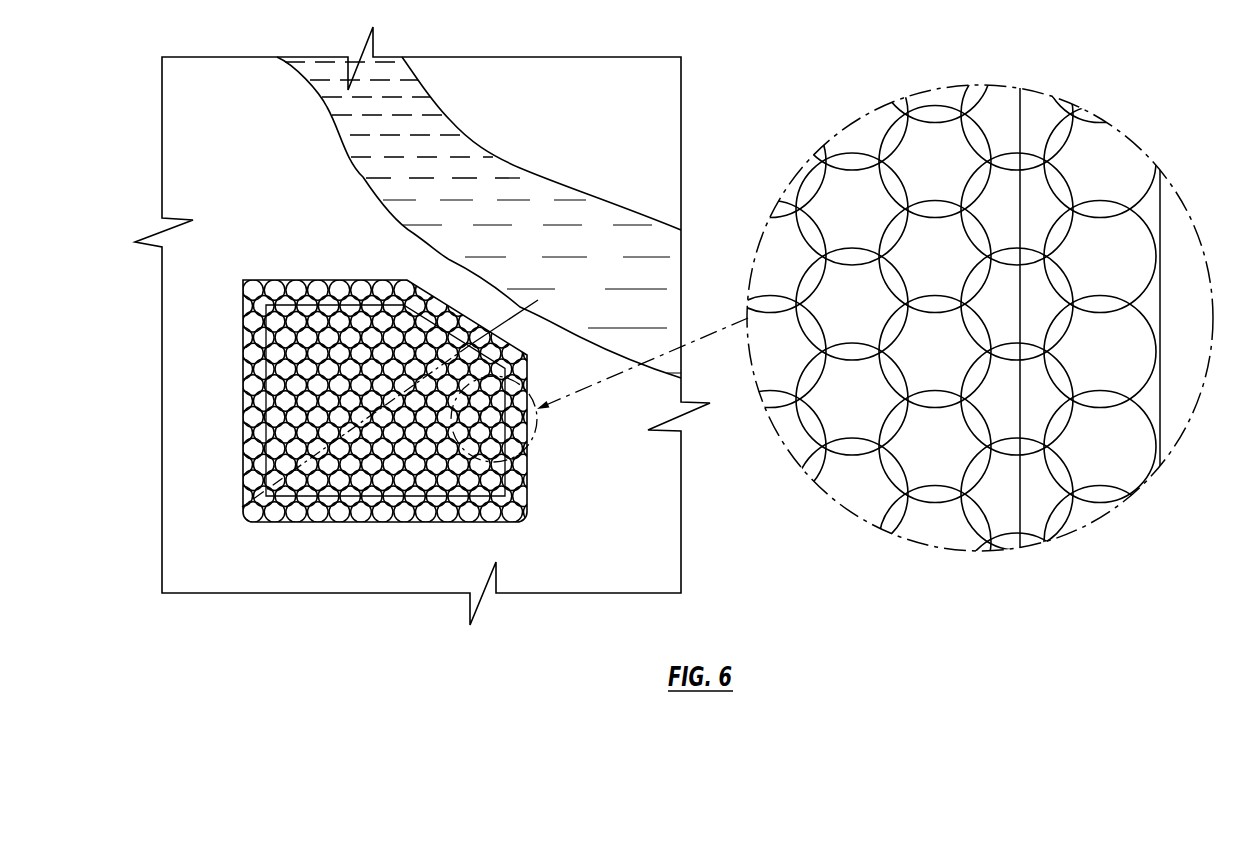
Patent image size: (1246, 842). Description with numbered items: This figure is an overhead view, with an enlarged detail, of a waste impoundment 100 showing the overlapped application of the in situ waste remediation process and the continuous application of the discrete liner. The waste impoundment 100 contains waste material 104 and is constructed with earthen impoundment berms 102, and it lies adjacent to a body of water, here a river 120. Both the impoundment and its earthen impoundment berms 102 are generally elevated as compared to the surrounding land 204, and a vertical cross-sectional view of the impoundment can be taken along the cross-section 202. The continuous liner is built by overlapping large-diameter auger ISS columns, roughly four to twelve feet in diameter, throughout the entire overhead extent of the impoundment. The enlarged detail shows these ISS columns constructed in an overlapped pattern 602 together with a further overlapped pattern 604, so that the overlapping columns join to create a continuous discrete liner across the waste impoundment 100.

The waste impoundment 100 is at (286, 240).
The earthen impoundment berms 102 is at (521, 480).
The waste material 104 is at (339, 342).
The river 120 is at (538, 300).
The cross-section 202 is at (197, 480).
The surrounding land 204 is at (221, 134).
The overlapped pattern of ISS columns 602 is at (870, 146).
The overlapped pattern of ISS columns 604 is at (1015, 137).